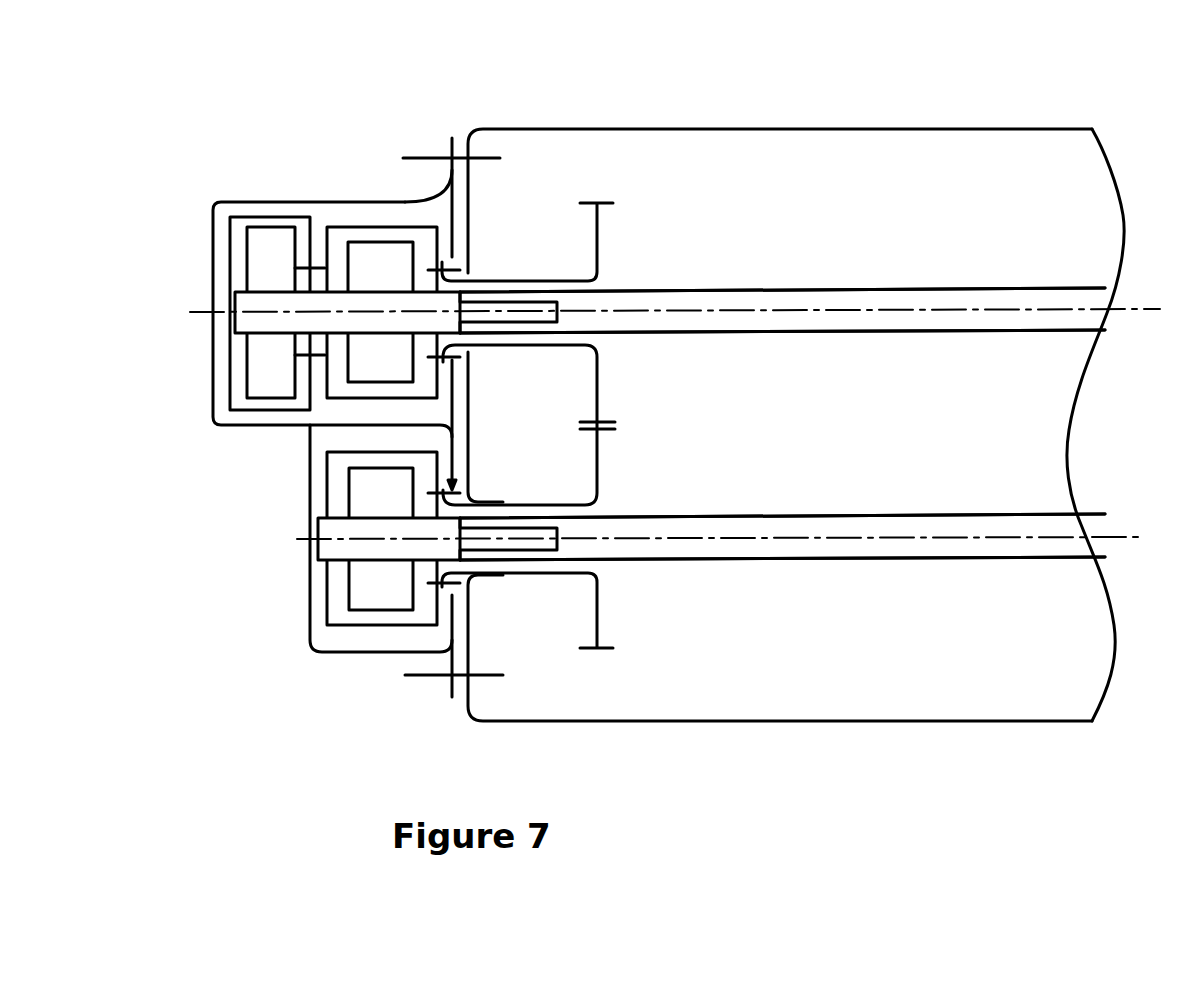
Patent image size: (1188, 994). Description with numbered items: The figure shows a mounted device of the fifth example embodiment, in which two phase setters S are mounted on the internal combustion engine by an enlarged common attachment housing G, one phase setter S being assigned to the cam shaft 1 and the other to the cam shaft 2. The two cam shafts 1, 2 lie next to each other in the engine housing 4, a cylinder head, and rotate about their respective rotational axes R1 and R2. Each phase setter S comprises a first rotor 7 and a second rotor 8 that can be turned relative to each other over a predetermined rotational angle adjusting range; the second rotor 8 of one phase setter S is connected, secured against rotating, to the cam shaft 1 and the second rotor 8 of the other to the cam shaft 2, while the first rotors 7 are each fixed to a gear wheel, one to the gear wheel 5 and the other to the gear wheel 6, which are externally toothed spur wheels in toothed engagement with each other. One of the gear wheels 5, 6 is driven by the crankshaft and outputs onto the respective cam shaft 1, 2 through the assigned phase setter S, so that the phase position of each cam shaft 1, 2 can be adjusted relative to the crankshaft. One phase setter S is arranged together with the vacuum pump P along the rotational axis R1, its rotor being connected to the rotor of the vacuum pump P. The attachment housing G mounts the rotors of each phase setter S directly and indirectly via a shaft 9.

The cam shaft 1 is at (887, 297).
The cam shaft 2 is at (850, 548).
The engine housing 4 is at (872, 138).
The gear wheel 5 is at (598, 238).
The gear wheel 6 is at (598, 618).
The first rotor 7 is at (362, 252).
The second rotor 8 is at (383, 262).
The shaft 9 is at (255, 323).
The vacuum pump P is at (263, 213).
The phase setter S is at (340, 217).
The attachment housing G is at (307, 487).
The rotational axis R1 is at (850, 312).
The rotational axis R2 is at (897, 537).